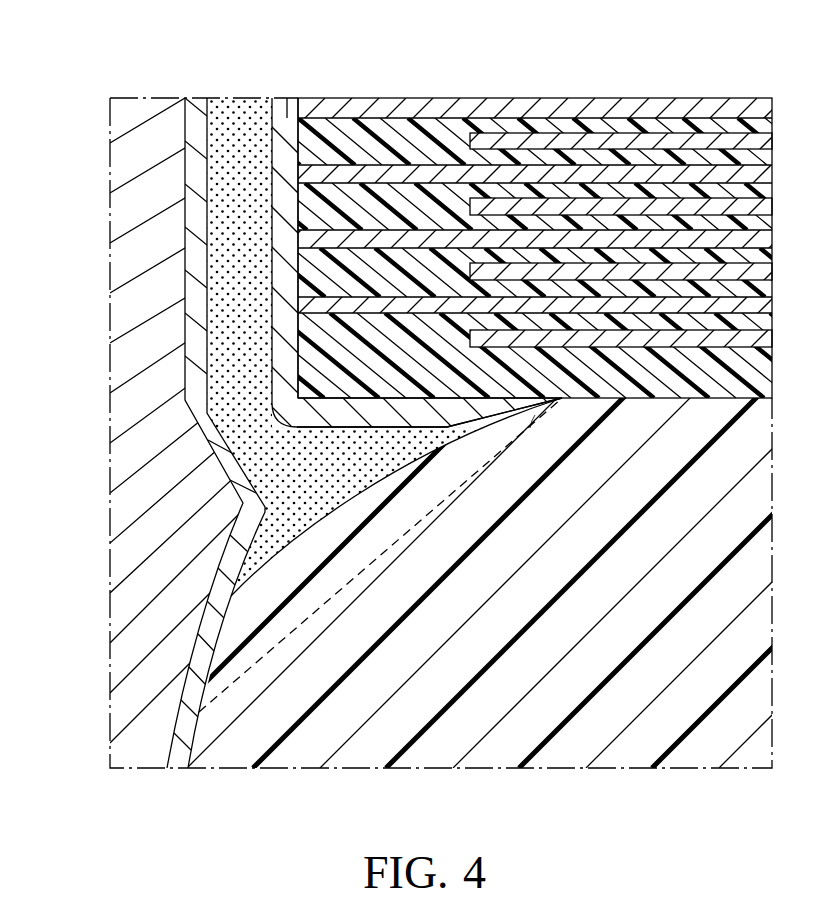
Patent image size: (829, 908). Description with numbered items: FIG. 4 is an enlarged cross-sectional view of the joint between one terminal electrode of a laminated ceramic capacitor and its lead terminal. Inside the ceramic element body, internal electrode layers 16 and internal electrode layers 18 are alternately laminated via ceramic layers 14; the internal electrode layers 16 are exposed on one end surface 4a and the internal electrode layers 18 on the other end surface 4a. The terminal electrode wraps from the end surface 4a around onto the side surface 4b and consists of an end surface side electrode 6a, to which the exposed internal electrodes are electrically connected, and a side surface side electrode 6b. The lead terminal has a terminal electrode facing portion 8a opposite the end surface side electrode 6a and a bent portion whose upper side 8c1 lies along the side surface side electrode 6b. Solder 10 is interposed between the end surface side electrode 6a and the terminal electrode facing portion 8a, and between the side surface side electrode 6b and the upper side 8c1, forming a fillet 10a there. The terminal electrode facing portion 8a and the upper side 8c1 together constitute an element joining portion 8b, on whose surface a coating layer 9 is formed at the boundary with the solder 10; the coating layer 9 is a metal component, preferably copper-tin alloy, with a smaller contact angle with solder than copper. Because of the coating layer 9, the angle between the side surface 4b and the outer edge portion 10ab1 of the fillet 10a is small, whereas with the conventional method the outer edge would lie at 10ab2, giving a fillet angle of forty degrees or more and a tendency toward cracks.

The end surface 4a is at (290, 98).
The side surface 4b is at (667, 405).
The end surface side electrode 6a is at (281, 158).
The side surface side electrode 6b is at (446, 405).
The terminal electrode facing portion 8a is at (128, 347).
The element joining portion 8b is at (140, 395).
The upper side of the bent portion 8c1 is at (133, 499).
The coating layer 9 is at (170, 732).
The solder 10 is at (228, 273).
The fillet 10a is at (358, 432).
The outer edge portion of the fillet 10ab1 is at (468, 436).
The outer edge portion of the fillet (conventional) 10ab2 is at (288, 640).
The ceramic layer 14 is at (410, 98).
The internal electrode layer 16 is at (485, 98).
The internal electrode layer 18 is at (773, 128).